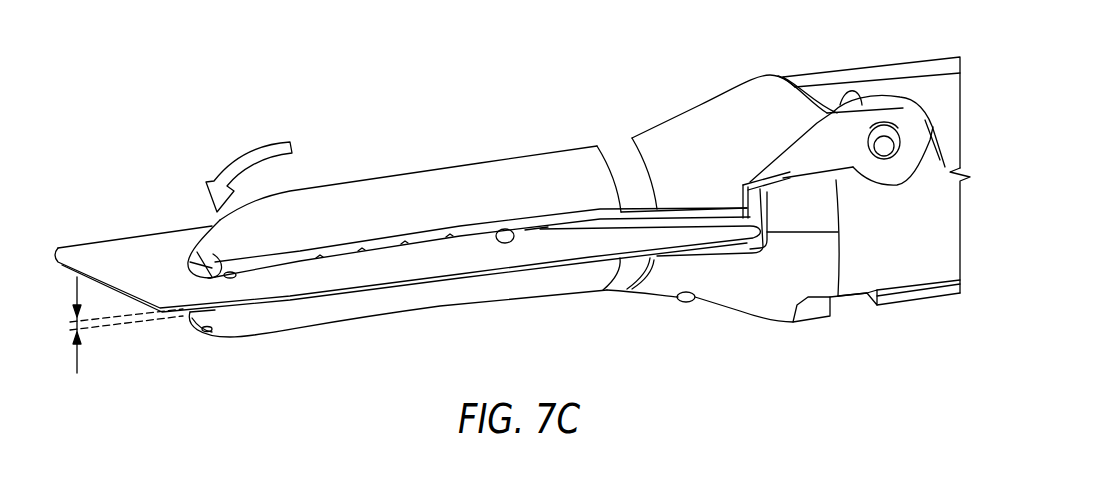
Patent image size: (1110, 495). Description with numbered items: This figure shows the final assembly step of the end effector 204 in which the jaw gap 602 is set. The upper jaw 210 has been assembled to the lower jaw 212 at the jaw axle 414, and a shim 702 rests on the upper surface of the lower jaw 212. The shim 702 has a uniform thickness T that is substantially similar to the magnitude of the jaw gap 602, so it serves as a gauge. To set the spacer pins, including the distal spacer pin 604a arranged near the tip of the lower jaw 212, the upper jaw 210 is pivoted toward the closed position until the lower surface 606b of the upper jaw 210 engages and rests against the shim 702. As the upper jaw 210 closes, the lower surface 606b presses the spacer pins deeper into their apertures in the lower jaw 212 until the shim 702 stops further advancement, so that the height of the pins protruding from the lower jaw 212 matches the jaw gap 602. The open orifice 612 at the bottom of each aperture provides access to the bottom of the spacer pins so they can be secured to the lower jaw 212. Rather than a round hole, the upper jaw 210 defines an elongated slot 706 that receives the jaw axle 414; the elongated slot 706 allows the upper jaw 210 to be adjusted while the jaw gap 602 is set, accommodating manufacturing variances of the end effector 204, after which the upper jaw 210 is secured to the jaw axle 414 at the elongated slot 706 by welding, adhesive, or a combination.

The end effector 204 is at (155, 59).
The upper jaw 210 is at (415, 166).
The lower jaw 212 is at (440, 304).
The jaw axle 414 is at (900, 106).
The jaw gap 602 is at (77, 360).
The distal spacer pin 604a is at (227, 278).
The lower surface of the upper jaw 606b is at (498, 229).
The open orifice 612 is at (222, 334).
The shim 702 is at (157, 232).
The elongated slot 706 is at (868, 127).